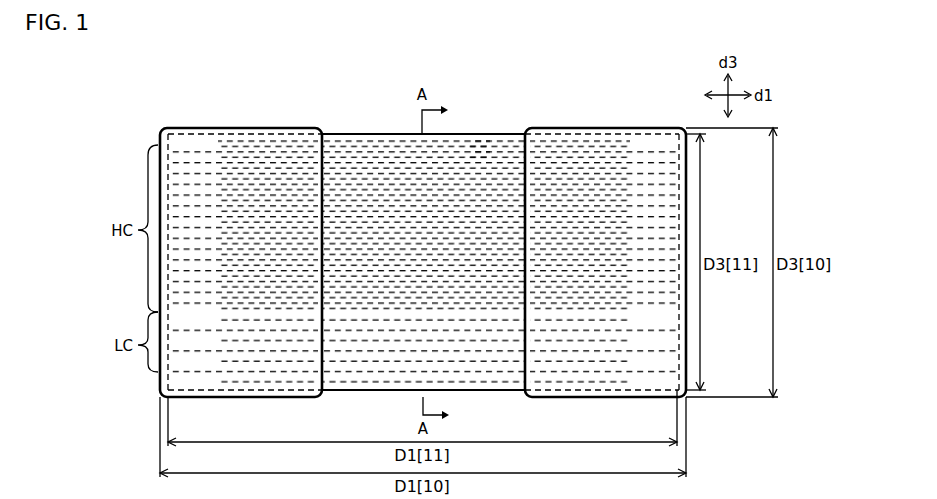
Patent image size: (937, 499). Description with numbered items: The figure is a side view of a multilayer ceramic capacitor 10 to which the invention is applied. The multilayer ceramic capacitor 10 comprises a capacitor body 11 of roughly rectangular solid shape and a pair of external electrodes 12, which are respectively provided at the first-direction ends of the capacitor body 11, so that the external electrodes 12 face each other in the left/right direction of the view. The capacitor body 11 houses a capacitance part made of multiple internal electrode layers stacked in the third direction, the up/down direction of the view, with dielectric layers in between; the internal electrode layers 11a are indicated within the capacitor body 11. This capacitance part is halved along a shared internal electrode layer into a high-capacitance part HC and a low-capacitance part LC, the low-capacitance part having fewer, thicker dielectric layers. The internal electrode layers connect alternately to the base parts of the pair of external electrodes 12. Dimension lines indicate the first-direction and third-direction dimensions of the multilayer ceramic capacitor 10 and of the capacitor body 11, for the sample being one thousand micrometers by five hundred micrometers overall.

The multilayer ceramic capacitor 10 is at (411, 239).
The capacitor body 11 is at (357, 134).
The body surface / side surface 11a is at (477, 152).
The external electrodes 12 is at (240, 128).